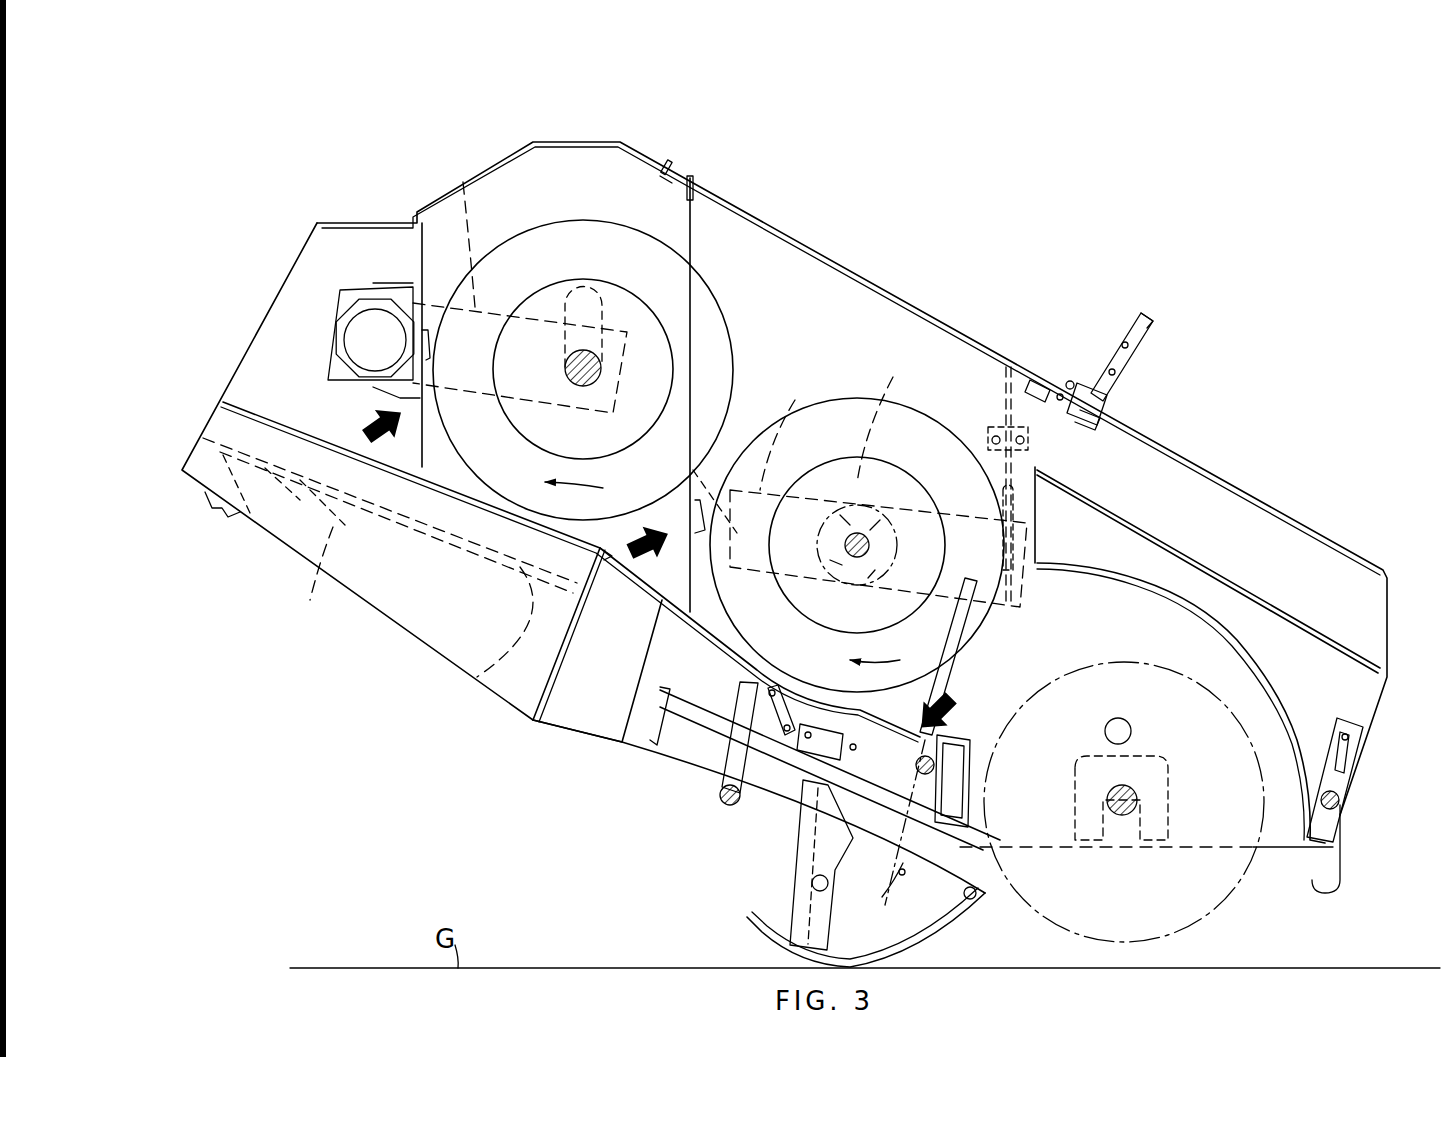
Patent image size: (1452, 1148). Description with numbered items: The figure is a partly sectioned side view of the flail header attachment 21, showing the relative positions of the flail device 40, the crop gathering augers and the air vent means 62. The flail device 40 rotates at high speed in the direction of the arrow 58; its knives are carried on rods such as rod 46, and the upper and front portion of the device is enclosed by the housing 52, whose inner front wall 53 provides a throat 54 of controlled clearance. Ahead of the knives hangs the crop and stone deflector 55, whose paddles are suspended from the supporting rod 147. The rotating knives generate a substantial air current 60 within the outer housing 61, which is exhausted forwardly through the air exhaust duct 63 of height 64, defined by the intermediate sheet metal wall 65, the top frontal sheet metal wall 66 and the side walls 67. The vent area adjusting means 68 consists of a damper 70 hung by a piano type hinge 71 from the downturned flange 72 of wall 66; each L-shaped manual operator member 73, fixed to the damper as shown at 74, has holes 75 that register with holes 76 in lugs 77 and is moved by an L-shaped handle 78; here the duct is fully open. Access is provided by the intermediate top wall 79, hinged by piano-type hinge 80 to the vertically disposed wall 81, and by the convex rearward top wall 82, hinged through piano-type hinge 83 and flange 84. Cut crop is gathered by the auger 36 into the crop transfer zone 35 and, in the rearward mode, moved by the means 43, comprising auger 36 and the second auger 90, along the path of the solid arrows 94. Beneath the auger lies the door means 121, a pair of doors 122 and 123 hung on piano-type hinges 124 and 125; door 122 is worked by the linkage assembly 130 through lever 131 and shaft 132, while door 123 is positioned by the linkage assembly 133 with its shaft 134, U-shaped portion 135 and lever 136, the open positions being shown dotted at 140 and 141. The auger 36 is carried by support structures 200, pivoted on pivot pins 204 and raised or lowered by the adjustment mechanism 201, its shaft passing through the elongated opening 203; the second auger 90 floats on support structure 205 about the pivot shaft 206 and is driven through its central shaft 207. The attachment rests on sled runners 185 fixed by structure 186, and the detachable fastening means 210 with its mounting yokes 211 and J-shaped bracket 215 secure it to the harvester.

The attachment 21 is at (922, 202).
The crop transfer zone 35 is at (868, 650).
The auger 36 is at (843, 397).
The flail device 40 is at (1235, 895).
The means for selectively moving dense swath 43 is at (685, 790).
The rod 46 is at (1133, 735).
The housing 52 is at (1388, 595).
The inner front wall 53 is at (1378, 655).
The throat 54 is at (1283, 714).
The crop and stone deflector 55 is at (1347, 865).
The direction of rotation 58 is at (1227, 787).
The air current 60 is at (1063, 447).
The outer housing 61 is at (1197, 451).
The air vent means 62 is at (1023, 400).
The air exhaust duct 63 is at (1217, 490).
The height 64 is at (1237, 483).
The intermediate sheet metal wall 65 is at (1250, 600).
The top frontal sheet metal wall 66 is at (1300, 520).
The side walls 67 is at (893, 317).
The vent area adjusting means 68 is at (1077, 372).
The damper 70 is at (1008, 425).
The piano type hinge 71 is at (1060, 394).
The downturned flange 72 is at (1043, 385).
The L-shaped manual operator member 73 is at (1120, 363).
The fixing location of operator member 74 is at (1160, 397).
The holes 75 is at (1128, 345).
The holes in lugs 76 is at (1098, 393).
The lugs 77 is at (1110, 397).
The L-shaped handle 78 is at (1147, 315).
The intermediate top wall 79 is at (775, 222).
The piano-type hinge 80 is at (697, 180).
The vertically disposed wall 81 is at (693, 237).
The rearward top wall 82 is at (525, 152).
The piano-type hinge 83 is at (668, 163).
The flange 84 is at (672, 182).
The second auger 90 is at (722, 295).
The crop path arrows 94 is at (362, 430).
The door means 121 is at (736, 675).
The door 122 is at (950, 678).
The door 123 is at (730, 660).
The piano-type hinge 124 is at (913, 737).
The piano-type hinge 125 is at (668, 630).
The linkage assembly 130 is at (858, 765).
The lever 131 is at (965, 645).
The shaft 132 is at (945, 765).
The linkage assembly 133 is at (722, 748).
The shaft 134 is at (728, 805).
The U-shaped portion 135 is at (626, 705).
The lever 136 is at (790, 622).
The dotted line position of door 140 is at (1030, 935).
The dotted line position of door 141 is at (602, 750).
The supporting rod 147 is at (1345, 805).
The sled runners 185 is at (765, 940).
The runner attaching structure 186 is at (803, 867).
The support structures 200 is at (767, 435).
The adjustment mechanism 201 is at (1040, 525).
The elongated opening 203 is at (901, 423).
The pivot pins 204 is at (693, 472).
The support structure 205 is at (463, 182).
The pivot shaft 206 is at (350, 340).
The central shaft 207 is at (605, 370).
The detachable fastening means 210 is at (245, 515).
The mounting yokes 211 is at (215, 497).
The J-shaped bracket 215 is at (318, 602).